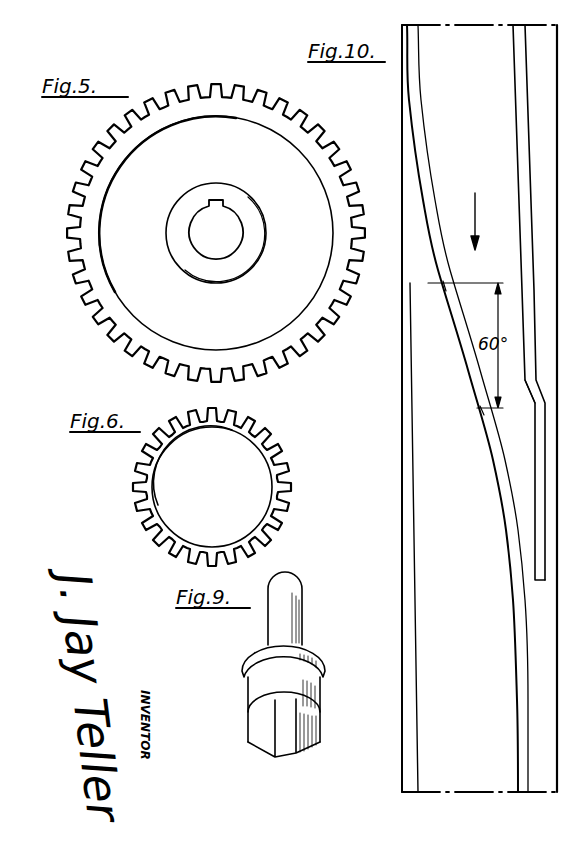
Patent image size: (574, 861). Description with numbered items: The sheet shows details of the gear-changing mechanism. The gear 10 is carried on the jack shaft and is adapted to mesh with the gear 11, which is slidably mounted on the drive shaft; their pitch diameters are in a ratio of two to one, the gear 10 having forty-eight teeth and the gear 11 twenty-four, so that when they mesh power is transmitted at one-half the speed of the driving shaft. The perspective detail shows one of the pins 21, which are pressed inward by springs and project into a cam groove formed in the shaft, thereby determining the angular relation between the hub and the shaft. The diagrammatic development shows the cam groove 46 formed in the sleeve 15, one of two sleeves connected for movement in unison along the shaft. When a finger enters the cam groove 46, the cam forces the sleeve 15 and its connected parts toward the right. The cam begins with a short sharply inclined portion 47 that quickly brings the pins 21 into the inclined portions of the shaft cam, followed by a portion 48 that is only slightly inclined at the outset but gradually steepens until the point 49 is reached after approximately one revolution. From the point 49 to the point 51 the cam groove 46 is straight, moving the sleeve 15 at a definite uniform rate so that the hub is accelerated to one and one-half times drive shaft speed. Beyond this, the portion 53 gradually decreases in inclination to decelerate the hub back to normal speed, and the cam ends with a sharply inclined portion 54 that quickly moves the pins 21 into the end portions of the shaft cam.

In FIG. 5, the gear 10 is at (103, 298).
In FIG. 6, the gear 11 is at (277, 473).
In FIG. 10, the sleeve 15 is at (402, 178).
In FIG. 9, the pin 21 is at (303, 681).
In FIG. 10, the cam groove 46 is at (518, 157).
In FIG. 10, the sharply inclined portion 47 is at (527, 393).
In FIG. 10, the portion 48 is at (526, 217).
In FIG. 10, the point 49 is at (483, 410).
In FIG. 10, the point 51 is at (445, 288).
In FIG. 10, the portion 53 is at (418, 112).
In FIG. 10, the sharply inclined portion 54 is at (453, 287).